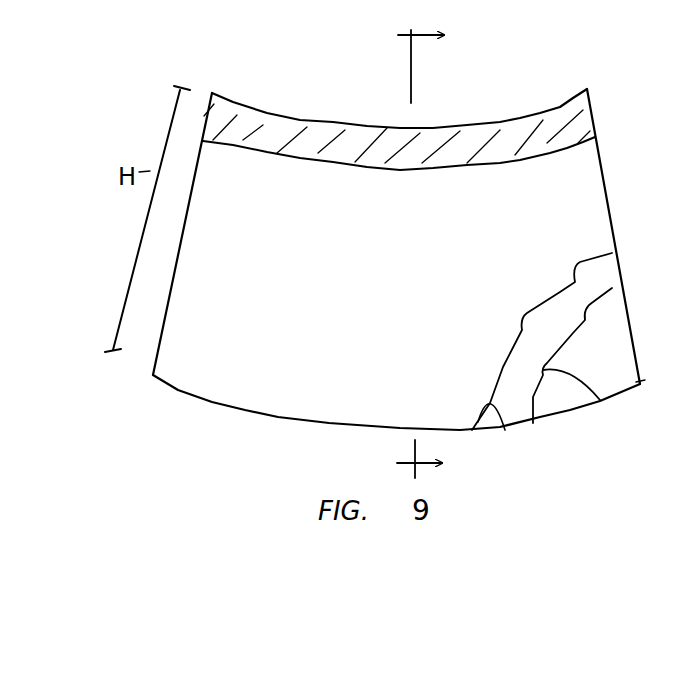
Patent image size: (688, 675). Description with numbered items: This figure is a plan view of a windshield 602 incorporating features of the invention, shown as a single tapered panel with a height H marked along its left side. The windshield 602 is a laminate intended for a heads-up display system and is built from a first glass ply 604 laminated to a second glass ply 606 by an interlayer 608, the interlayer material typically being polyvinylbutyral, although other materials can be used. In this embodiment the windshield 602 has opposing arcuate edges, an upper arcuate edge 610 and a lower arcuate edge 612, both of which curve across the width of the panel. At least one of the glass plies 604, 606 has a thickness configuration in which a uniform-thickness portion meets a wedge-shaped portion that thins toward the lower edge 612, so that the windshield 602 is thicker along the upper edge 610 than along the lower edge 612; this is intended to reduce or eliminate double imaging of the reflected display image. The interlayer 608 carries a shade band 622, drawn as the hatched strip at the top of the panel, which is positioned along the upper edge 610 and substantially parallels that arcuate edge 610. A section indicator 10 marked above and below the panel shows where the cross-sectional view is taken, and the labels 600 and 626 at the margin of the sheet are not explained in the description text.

The section line 10- 10 is at (438, 248).
The assembly 600 is at (673, 43).
The windshield 602 is at (278, 86).
The first glass ply 604 is at (632, 332).
The second glass ply 606 is at (505, 430).
The interlayer 608 is at (600, 400).
The upper arcuate edge 610 is at (440, 126).
The lower arcuate edge 612 is at (283, 418).
The shade band 622 is at (511, 135).
The adjacent element 626 is at (673, 536).